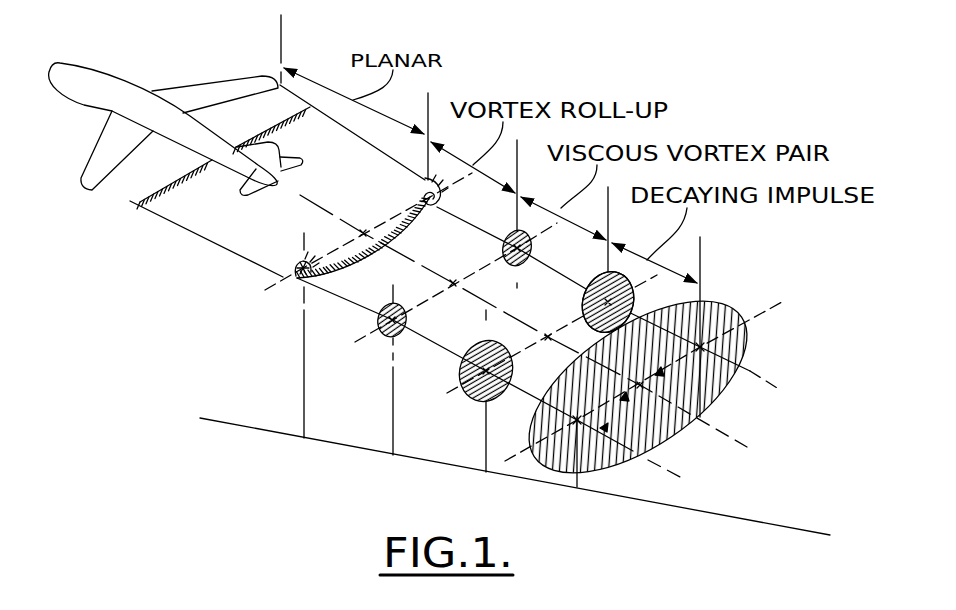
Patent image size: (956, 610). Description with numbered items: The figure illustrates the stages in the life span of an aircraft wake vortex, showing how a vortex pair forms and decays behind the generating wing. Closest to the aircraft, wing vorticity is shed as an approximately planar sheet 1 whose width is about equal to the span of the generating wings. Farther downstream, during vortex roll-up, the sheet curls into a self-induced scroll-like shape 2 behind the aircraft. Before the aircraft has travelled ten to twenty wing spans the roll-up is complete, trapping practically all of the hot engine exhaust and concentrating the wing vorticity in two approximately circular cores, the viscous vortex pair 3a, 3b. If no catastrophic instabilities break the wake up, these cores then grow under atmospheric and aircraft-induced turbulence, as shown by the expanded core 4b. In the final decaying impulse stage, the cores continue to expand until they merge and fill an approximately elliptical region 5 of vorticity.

The planar sheet 1 is at (135, 203).
The scroll-like shape 2 is at (297, 280).
The viscous vortex pair 3a is at (381, 340).
The viscous vortex pair 3b is at (533, 248).
The expanded core 4b is at (634, 292).
The elliptical region 5 is at (748, 357).